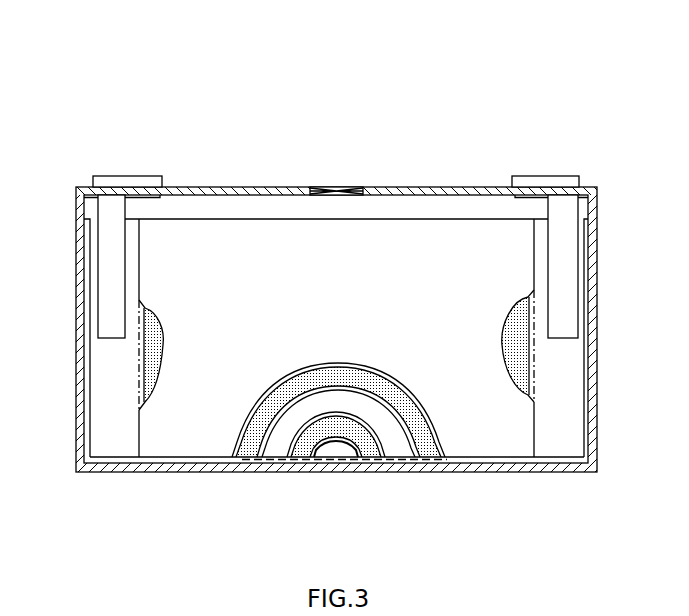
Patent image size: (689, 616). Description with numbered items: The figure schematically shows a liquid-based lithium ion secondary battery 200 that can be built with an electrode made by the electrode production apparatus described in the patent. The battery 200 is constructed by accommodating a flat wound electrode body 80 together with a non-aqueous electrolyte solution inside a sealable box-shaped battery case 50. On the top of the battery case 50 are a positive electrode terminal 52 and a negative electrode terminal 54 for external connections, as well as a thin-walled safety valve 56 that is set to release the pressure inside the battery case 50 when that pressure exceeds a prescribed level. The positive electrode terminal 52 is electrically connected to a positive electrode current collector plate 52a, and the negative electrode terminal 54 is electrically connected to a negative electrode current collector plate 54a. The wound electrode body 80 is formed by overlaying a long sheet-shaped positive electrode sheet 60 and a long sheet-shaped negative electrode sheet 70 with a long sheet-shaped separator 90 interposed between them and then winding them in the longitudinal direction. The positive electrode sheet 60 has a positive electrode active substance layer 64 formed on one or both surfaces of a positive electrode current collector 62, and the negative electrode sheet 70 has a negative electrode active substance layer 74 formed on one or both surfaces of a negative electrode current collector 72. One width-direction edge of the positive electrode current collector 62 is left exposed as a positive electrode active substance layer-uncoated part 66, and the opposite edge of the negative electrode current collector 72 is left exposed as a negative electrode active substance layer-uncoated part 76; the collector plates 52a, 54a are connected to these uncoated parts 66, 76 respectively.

The lithium ion secondary battery 200 is at (65, 50).
The battery case 50 is at (78, 186).
The positive electrode terminal 52 is at (138, 175).
The negative electrode terminal 54 is at (555, 175).
The positive electrode current collector plate 52a is at (112, 258).
The negative electrode current collector plate 54a is at (565, 252).
The safety valve 56 is at (345, 186).
The positive electrode sheet 60 is at (245, 456).
The positive electrode current collector 62 is at (91, 360).
The positive electrode active substance layer 64 is at (163, 334).
The positive electrode active substance layer-uncoated part 66 is at (103, 428).
The negative electrode sheet 70 is at (302, 453).
The negative electrode current collector 72 is at (583, 362).
The negative electrode active substance layer 74 is at (502, 328).
The negative electrode active substance layer-uncoated part 76 is at (563, 425).
The wound electrode body 80 is at (258, 218).
The separator 90 is at (280, 445).